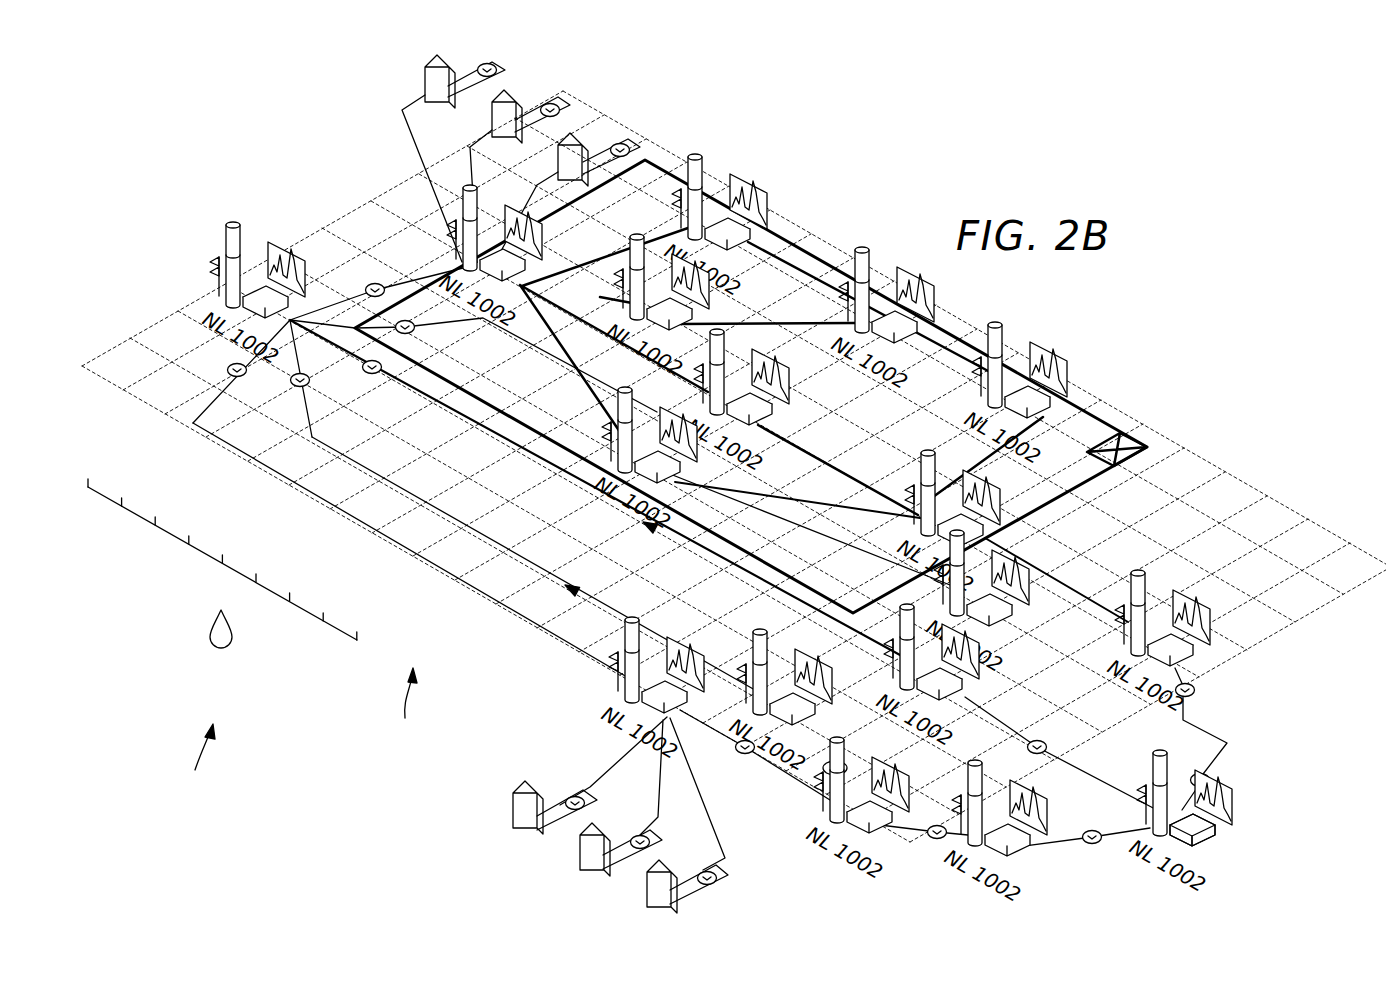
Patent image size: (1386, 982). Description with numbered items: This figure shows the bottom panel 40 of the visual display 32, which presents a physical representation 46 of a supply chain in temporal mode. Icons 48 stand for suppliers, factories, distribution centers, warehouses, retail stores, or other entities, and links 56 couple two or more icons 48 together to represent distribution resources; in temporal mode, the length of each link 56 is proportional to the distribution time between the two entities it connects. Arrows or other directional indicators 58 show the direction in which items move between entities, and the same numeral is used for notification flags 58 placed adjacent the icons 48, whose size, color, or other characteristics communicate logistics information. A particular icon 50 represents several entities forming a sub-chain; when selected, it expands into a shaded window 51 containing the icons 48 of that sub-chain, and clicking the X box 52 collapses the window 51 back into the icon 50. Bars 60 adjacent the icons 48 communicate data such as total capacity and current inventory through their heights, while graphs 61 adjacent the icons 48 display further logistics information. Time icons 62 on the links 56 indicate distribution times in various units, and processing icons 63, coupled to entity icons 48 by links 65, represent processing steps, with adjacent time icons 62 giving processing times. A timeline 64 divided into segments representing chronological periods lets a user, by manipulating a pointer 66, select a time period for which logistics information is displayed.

The visual display 32 is at (191, 758).
The bottom panel 40 is at (143, 402).
The physical representation 46 is at (402, 705).
The icons 48 is at (1205, 838).
The icon 50 is at (520, 285).
The shaded window 51 is at (1104, 420).
The X box 52 is at (1145, 457).
The links 56 is at (572, 487).
The directional indicators 58 is at (653, 532).
The bars 60 is at (1152, 770).
The graphs 61 is at (1212, 784).
The time icons 62 is at (228, 369).
The processing icons 63 is at (657, 903).
The timeline 64 is at (208, 552).
The links 65 is at (708, 813).
The pointer 66 is at (208, 640).